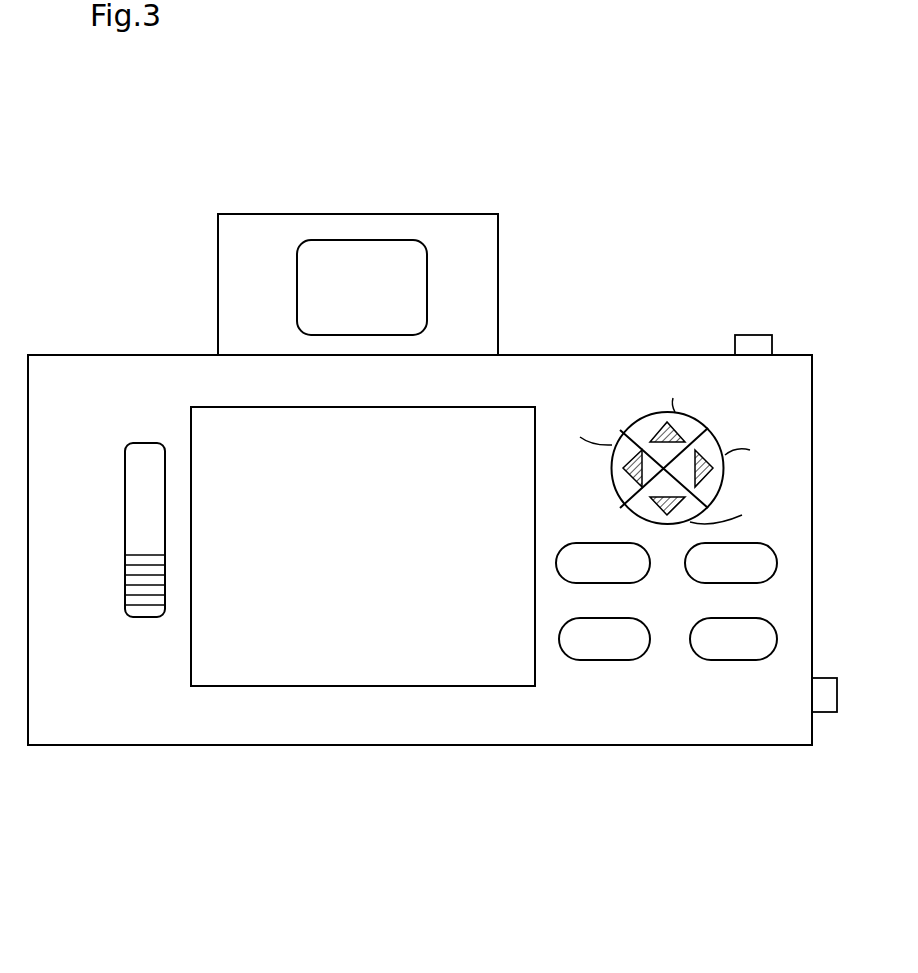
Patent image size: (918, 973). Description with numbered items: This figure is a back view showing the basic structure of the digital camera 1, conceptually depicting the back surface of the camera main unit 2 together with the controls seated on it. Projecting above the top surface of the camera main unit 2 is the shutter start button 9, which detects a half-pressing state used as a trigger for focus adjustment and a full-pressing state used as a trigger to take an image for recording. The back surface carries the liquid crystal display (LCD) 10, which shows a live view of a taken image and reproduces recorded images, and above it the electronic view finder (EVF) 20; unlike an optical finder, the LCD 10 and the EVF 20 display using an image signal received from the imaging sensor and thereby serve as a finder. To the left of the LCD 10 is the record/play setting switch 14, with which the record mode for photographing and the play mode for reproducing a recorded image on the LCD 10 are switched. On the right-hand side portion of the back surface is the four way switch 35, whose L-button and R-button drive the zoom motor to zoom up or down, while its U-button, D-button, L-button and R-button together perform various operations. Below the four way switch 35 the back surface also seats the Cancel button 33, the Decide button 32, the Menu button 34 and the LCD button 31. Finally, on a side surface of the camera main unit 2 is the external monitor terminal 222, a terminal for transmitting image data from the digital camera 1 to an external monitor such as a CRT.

The digital camera 1 is at (282, 127).
The camera main unit 2 is at (190, 754).
The shutter start button 9 is at (752, 335).
The liquid crystal display (LCD) 10 is at (352, 686).
The record/play setting switch 14 is at (145, 617).
The electronic view finder (EVF) 20 is at (427, 285).
The LCD button 31 is at (777, 640).
The Decide button 32 is at (777, 570).
The Cancel button 33 is at (650, 563).
The Menu button 34 is at (650, 640).
The four way switch 35 is at (717, 426).
The external monitor terminal 222 is at (828, 712).